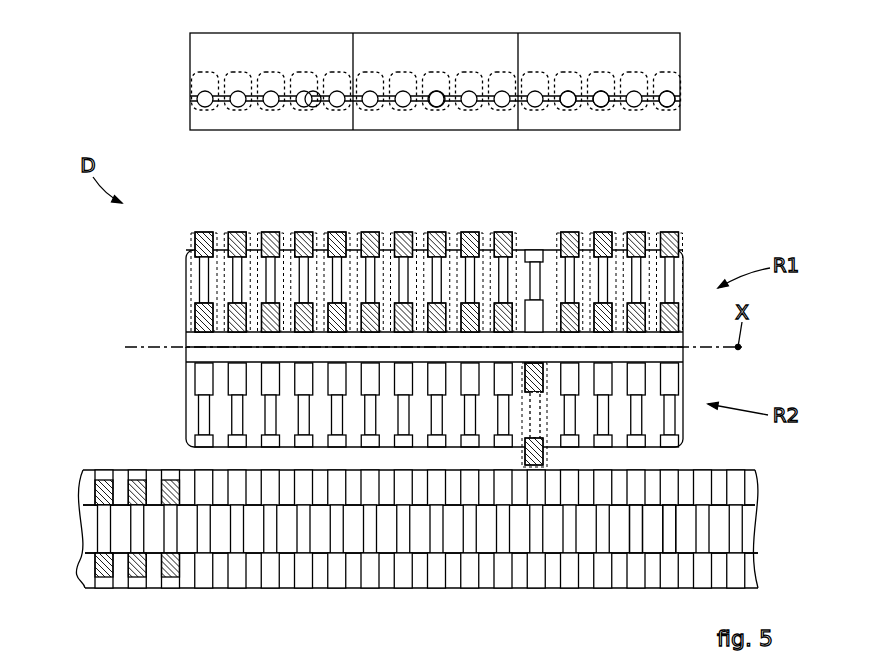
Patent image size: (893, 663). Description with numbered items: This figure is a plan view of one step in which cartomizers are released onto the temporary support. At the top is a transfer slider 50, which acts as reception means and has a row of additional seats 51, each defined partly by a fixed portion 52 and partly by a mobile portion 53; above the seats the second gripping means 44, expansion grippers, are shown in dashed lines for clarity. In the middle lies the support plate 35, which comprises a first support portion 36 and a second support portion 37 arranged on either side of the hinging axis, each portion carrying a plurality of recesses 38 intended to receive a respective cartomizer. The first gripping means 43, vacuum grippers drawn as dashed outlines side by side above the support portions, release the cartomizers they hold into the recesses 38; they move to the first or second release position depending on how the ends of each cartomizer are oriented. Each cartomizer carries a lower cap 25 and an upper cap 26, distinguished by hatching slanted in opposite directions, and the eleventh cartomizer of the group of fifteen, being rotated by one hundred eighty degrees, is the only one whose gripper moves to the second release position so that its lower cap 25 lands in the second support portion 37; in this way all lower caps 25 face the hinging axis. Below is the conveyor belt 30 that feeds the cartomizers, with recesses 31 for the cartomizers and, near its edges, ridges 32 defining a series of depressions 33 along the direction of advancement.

The transfer slider 50 is at (501, 88).
The fixed portion 52 is at (681, 56).
The mobile portion 53 is at (681, 113).
The second gripping means 44 is at (236, 72).
The additional seat 51 is at (313, 100).
The support plate 35 is at (85, 270).
The first support portion 36 is at (683, 270).
The second support portion 37 is at (683, 425).
The first gripping means 43 is at (398, 420).
The upper cap 26 is at (177, 241).
The lower cap 25 is at (177, 315).
The recess 38 is at (535, 272).
The conveyor belt 30 is at (457, 556).
The recess 31 is at (667, 537).
The ridge 32 is at (483, 575).
The depression 33 is at (336, 575).